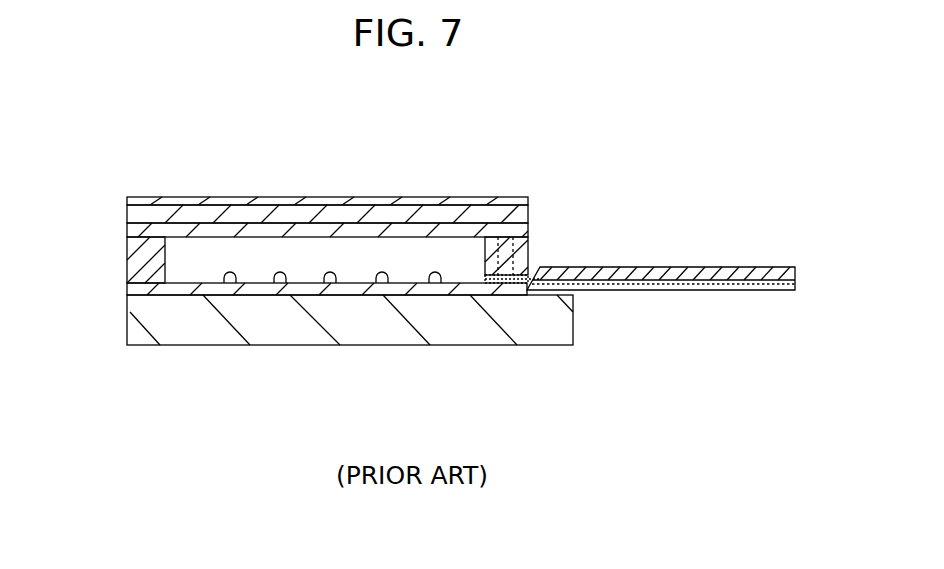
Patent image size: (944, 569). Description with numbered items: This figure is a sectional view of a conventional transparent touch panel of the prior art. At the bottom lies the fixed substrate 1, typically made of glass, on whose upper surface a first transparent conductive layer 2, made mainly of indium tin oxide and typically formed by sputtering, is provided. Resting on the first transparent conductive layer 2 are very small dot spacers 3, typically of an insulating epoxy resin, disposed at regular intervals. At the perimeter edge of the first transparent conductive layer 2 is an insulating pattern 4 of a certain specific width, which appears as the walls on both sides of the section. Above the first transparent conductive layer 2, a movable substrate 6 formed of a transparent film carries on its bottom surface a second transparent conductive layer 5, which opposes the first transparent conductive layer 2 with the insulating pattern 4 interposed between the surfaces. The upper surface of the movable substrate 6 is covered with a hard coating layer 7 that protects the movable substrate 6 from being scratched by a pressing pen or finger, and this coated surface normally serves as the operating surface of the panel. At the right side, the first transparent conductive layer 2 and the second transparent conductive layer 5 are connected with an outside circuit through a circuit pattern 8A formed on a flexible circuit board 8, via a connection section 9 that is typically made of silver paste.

The fixed substrate 1 is at (255, 335).
The first transparent conductive layer 2 is at (178, 290).
The dot spacer 3 is at (282, 280).
The insulating pattern 4 is at (128, 247).
The second transparent conductive layer 5 is at (263, 232).
The movable substrate 6 is at (213, 213).
The hard coating layer 7 is at (160, 198).
The flexible circuit board 8 is at (620, 268).
The circuit pattern 8A is at (690, 291).
The connection section 9 is at (537, 272).